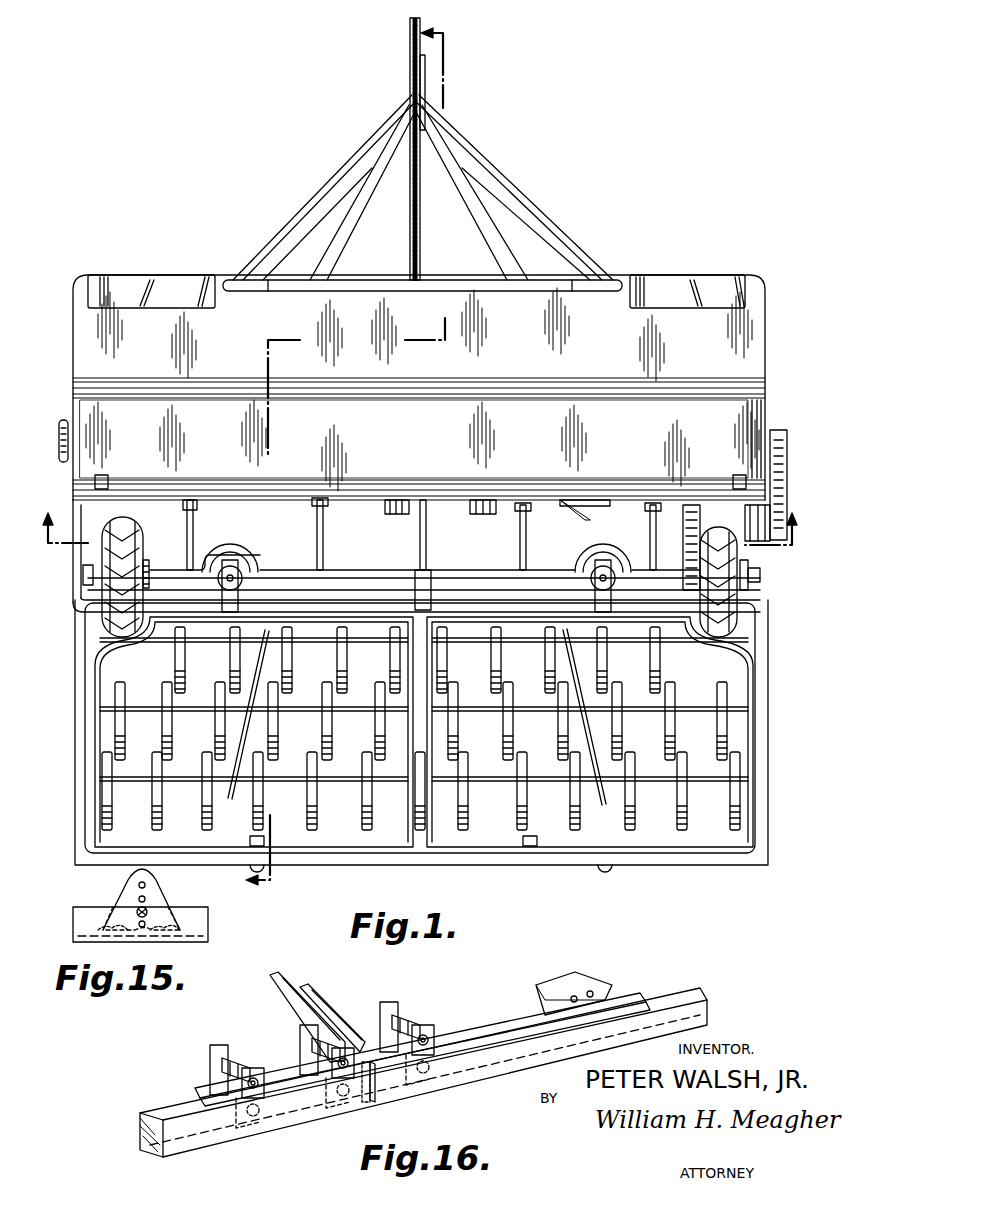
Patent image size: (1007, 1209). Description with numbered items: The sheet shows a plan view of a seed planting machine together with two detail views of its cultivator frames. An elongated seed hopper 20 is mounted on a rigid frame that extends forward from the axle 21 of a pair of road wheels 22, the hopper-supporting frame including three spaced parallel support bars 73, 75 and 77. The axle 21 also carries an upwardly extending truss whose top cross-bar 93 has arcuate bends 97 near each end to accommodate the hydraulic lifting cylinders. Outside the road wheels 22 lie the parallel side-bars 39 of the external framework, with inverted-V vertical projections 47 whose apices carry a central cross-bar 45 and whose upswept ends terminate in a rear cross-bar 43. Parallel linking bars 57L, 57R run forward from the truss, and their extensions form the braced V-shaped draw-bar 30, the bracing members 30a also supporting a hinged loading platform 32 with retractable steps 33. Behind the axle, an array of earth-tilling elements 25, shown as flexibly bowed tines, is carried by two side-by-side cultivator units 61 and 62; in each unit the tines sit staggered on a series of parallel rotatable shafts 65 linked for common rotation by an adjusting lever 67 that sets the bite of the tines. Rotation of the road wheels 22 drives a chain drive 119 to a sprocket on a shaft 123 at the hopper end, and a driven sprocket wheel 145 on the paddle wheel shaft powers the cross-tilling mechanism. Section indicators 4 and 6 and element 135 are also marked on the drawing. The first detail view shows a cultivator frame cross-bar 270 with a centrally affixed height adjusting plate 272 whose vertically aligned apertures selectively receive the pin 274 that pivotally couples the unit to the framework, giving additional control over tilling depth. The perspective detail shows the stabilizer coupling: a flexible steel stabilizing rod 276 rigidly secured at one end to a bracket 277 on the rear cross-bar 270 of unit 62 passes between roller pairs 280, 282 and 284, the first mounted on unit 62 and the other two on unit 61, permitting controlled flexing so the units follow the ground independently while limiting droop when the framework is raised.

In FIG. 1, the section line 6- 6 is at (350, 460).
In FIG. 1, the V-shaped draw-bar 30 is at (495, 138).
In FIG. 1, the bracing members 30a is at (316, 216).
In FIG. 1, the retractable steps 33 is at (125, 280).
In FIG. 1, the hinged loading platform 32 is at (525, 329).
In FIG. 1, the seed hopper 20 is at (383, 445).
In FIG. 1, the driven sprocket wheel 145 is at (63, 420).
In FIG. 1, the drive motor 135 is at (778, 480).
In FIG. 1, the road wheels 22 is at (127, 520).
In FIG. 1, the support bar 73 is at (193, 528).
In FIG. 1, the arcuate bends 97 is at (236, 548).
In FIG. 1, the left linking bar 57L is at (316, 538).
In FIG. 1, the support bar 75 is at (422, 532).
In FIG. 1, the top cross-bar 93 is at (432, 578).
In FIG. 1, the right linking bar 57R is at (526, 545).
In FIG. 1, the shaft 123 is at (648, 520).
In FIG. 1, the support bar 77 is at (655, 542).
In FIG. 1, the chain drive 119 is at (690, 558).
In FIG. 1, the axle 21 is at (152, 572).
In FIG. 1, the section line 4- 4 is at (419, 545).
In FIG. 1, the central cross-bar 45 is at (752, 592).
In FIG. 1, the vertical projections 47 is at (76, 655).
In FIG. 1, the rotatable shafts 65 is at (193, 706).
In FIG. 1, the cultivator unit 61 is at (260, 732).
In FIG. 16, the cultivator unit 61 is at (255, 1022).
In FIG. 1, the cultivator unit 62 is at (541, 671).
In FIG. 16, the cultivator unit 62 is at (355, 1004).
In FIG. 1, the adjusting lever 67 is at (242, 746).
In FIG. 1, the earth-tilling elements 25 is at (378, 732).
In FIG. 1, the side-bars 39 is at (75, 760).
In FIG. 1, the rear cross-bar 43 is at (530, 862).
In FIG. 15, the cross-bar 270 is at (82, 923).
In FIG. 16, the cross-bar 270 is at (712, 1000).
In FIG. 15, the height adjusting plate 272 is at (130, 890).
In FIG. 15, the pin 274 is at (152, 902).
In FIG. 16, the stabilizing rod 276 is at (466, 1022).
In FIG. 16, the bracket 277 is at (590, 976).
In FIG. 16, the roller pair 280 is at (395, 1015).
In FIG. 16, the roller pair 282 is at (312, 1048).
In FIG. 16, the roller pair 284 is at (222, 1070).